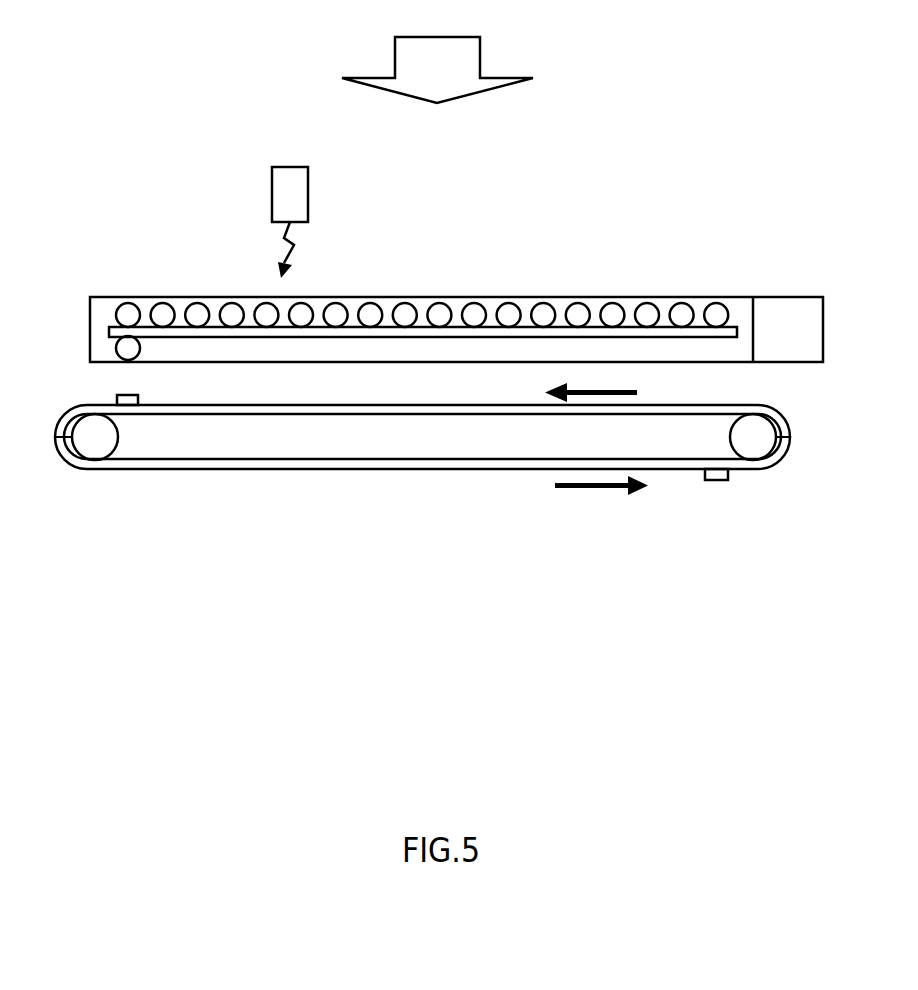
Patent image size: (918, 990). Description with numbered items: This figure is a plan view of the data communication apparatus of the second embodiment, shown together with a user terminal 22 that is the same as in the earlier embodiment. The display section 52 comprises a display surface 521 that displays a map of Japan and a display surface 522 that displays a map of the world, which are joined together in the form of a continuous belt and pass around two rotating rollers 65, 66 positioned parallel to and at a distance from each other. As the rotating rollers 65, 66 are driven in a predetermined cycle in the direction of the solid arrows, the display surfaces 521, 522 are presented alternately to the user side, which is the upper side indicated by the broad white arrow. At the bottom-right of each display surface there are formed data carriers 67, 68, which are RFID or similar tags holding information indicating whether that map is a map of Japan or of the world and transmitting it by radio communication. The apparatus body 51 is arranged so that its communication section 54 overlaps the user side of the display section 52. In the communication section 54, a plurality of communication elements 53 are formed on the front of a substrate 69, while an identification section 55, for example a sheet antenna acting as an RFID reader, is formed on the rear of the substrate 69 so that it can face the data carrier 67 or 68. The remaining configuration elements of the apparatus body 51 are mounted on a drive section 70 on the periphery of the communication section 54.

The user terminal 22 is at (287, 168).
The apparatus body 51 is at (738, 256).
The communication elements 53 is at (158, 303).
The communication section 54 is at (634, 296).
The identification section 55 is at (140, 348).
The substrate 69 is at (708, 338).
The drive section 70 is at (813, 330).
The display section 52 is at (195, 495).
The display surface 521 is at (330, 410).
The display surface 522 is at (432, 470).
The rotating roller 65 is at (100, 440).
The rotating roller 66 is at (765, 445).
The data carrier 67 is at (113, 397).
The data carrier 68 is at (705, 480).